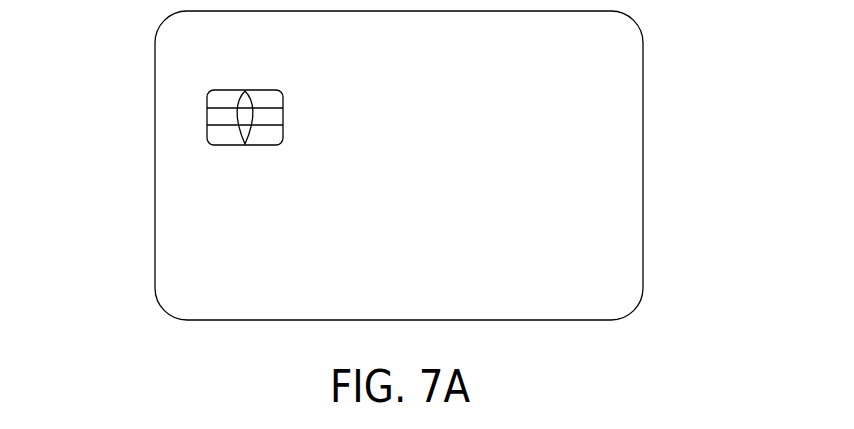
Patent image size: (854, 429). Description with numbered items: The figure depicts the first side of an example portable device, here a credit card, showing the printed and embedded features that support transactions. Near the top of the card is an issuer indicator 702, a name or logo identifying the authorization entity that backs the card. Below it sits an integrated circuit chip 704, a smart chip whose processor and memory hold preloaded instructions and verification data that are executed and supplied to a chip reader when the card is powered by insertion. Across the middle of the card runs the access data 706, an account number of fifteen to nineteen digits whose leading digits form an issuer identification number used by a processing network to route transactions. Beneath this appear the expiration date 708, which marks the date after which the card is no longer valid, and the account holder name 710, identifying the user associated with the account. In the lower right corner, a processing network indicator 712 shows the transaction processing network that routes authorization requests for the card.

The issuer indicator 702 is at (193, 50).
The integrated circuit chip 704 is at (207, 118).
The access data 706 is at (181, 184).
The expiration date 708 is at (183, 215).
The account holder name 710 is at (212, 263).
The processing network indicator 712 is at (607, 273).